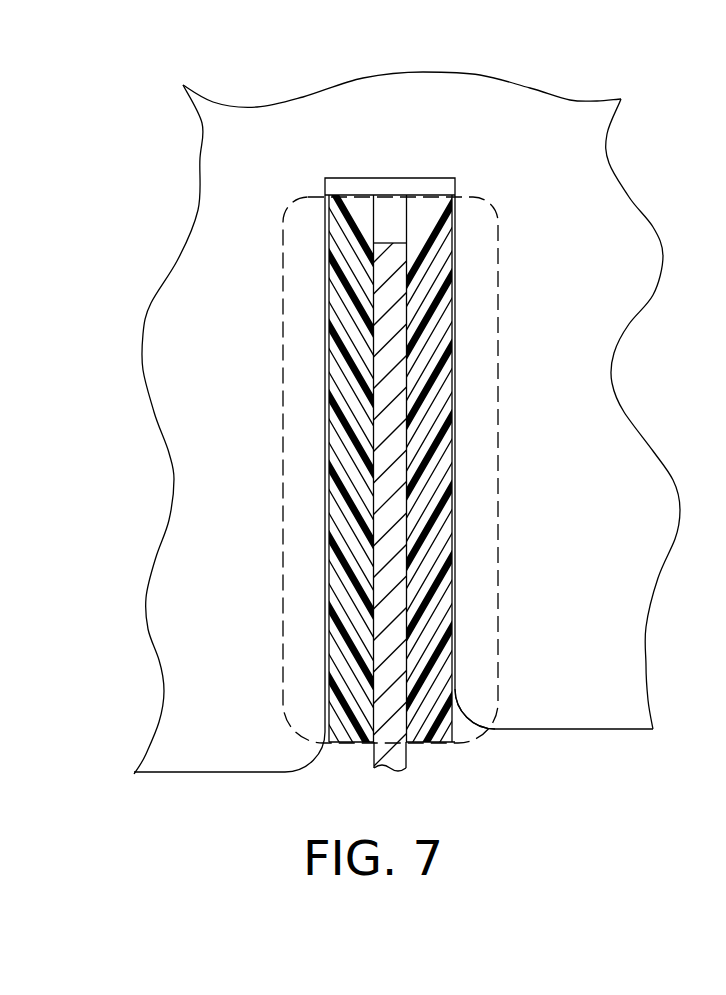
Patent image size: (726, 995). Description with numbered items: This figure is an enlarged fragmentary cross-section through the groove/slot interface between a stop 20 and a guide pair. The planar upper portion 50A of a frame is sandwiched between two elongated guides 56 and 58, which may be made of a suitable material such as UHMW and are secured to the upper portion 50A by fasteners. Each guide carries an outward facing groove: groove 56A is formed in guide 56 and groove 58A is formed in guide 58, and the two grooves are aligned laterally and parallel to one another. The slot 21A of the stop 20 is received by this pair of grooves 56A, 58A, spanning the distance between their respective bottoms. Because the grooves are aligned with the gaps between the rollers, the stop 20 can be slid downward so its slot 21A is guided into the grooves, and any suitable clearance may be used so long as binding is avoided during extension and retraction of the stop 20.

The stop 20 is at (538, 122).
The planar upper portion 50A is at (394, 255).
The slot 21A is at (331, 282).
The elongated guide 56 is at (432, 740).
The elongated guide 58 is at (350, 740).
The groove 56A is at (468, 728).
The groove 58A is at (298, 738).